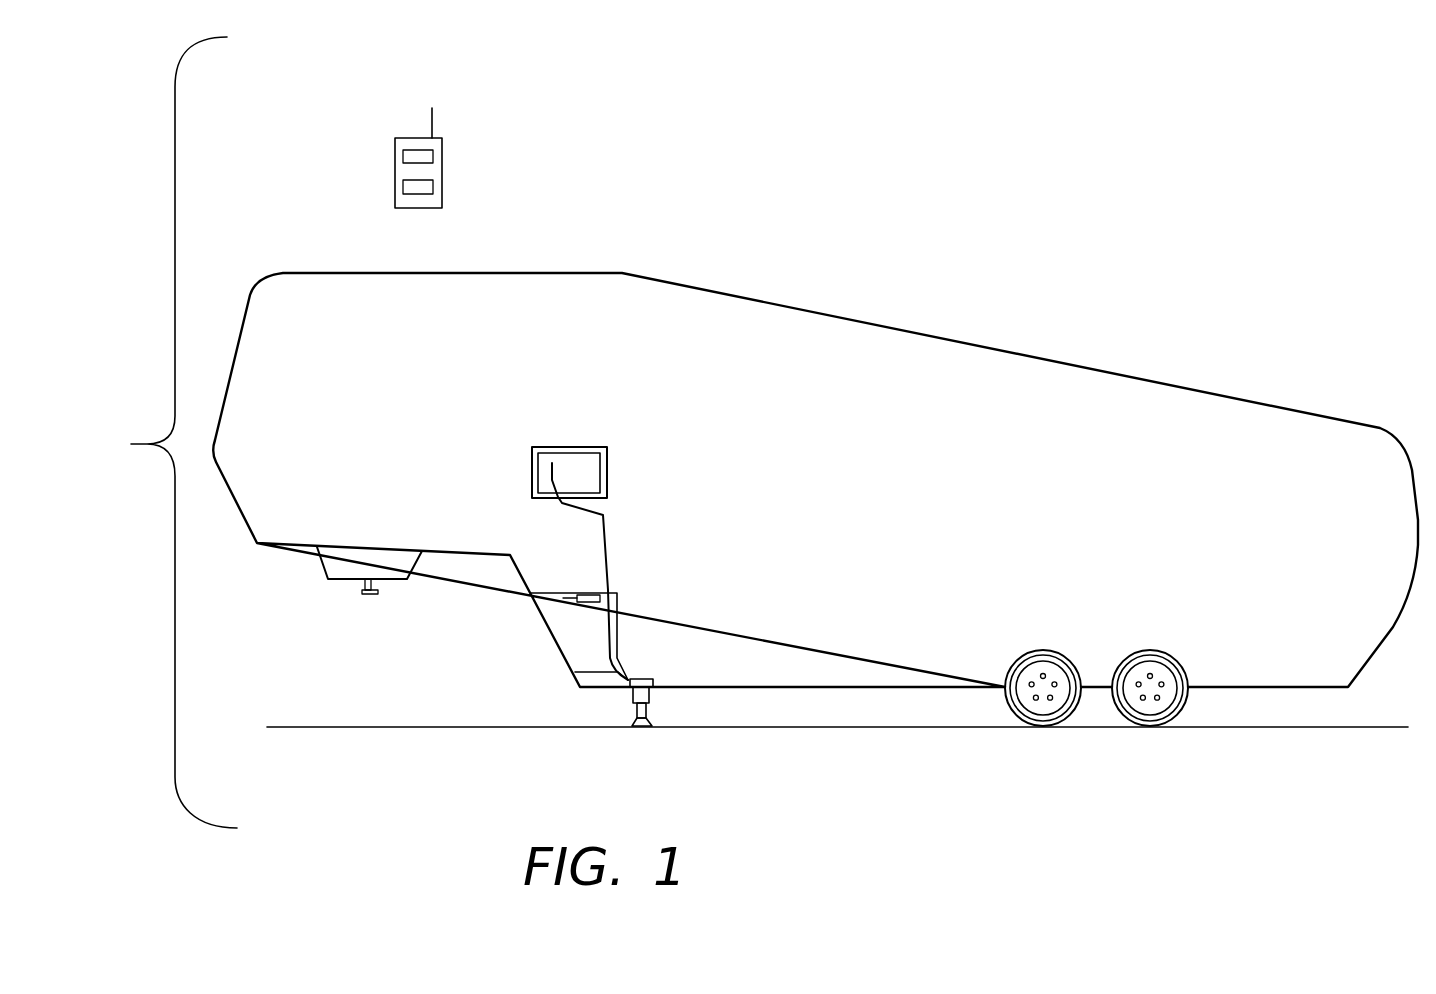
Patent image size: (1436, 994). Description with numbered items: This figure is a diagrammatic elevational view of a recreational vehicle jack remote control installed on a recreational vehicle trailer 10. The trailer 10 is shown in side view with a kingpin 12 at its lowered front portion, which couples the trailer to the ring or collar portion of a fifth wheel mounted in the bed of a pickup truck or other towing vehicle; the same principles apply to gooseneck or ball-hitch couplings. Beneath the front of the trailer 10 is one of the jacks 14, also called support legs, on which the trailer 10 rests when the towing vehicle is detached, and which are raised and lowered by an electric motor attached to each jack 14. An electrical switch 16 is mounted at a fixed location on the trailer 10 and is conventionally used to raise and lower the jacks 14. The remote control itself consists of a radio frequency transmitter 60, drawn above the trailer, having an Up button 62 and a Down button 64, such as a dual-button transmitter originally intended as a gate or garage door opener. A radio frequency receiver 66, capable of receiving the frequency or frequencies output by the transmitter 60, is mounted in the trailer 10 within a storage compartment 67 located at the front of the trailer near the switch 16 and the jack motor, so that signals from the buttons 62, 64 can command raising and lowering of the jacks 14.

The recreational vehicle trailer 10 is at (1040, 360).
The kingpin 12 is at (367, 597).
The jacks 14 is at (652, 698).
The electrical switch 16 is at (557, 446).
The radio frequency transmitter 60 is at (423, 164).
The Up button 62 is at (433, 156).
The Down button 64 is at (433, 186).
The radio frequency receiver 66 is at (585, 604).
The storage compartment 67 is at (552, 633).